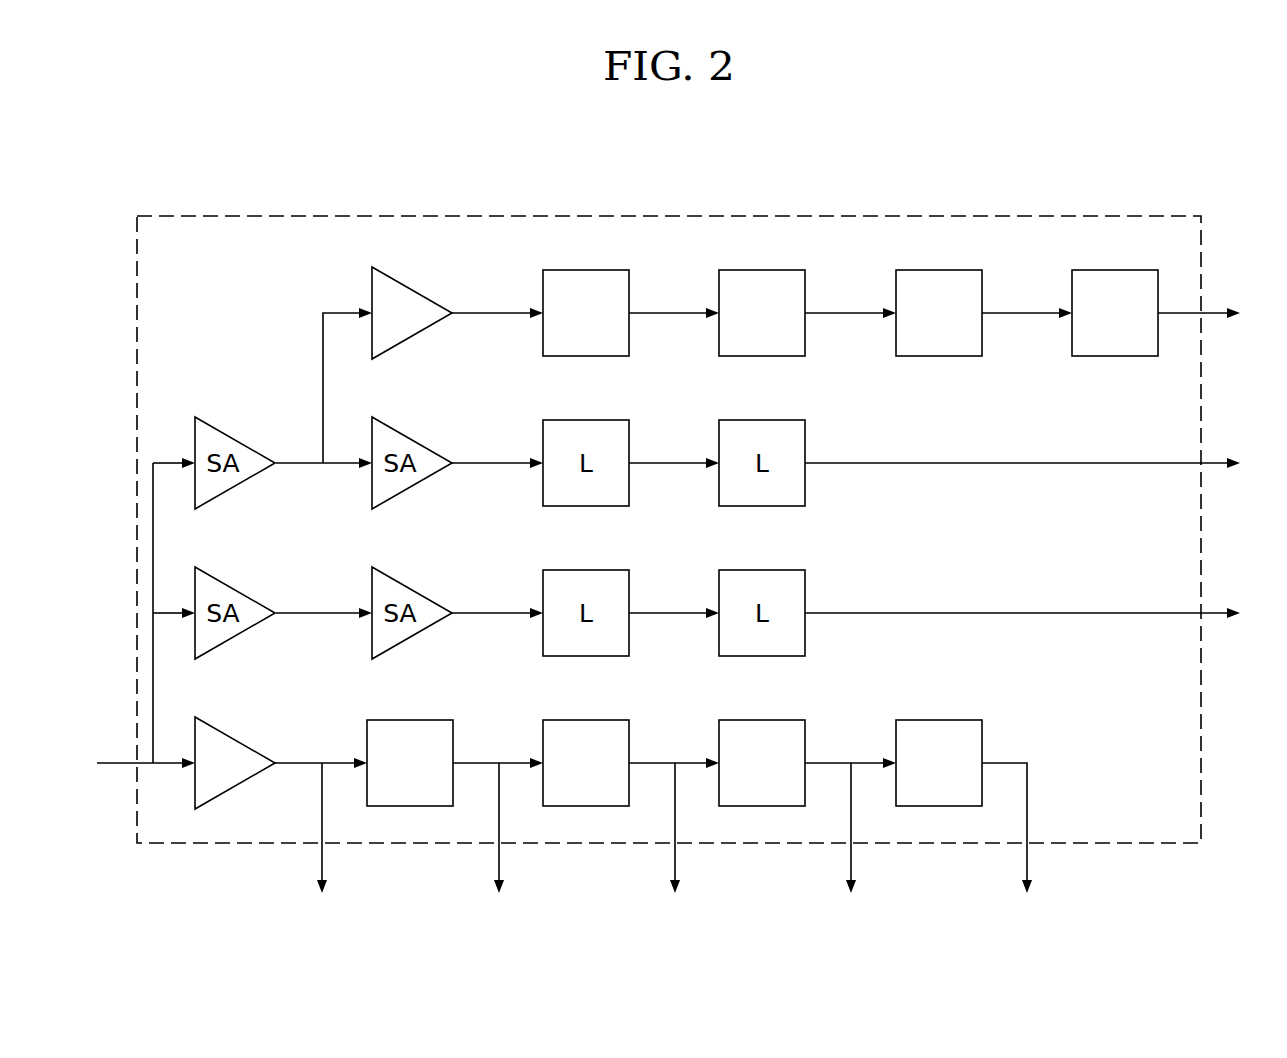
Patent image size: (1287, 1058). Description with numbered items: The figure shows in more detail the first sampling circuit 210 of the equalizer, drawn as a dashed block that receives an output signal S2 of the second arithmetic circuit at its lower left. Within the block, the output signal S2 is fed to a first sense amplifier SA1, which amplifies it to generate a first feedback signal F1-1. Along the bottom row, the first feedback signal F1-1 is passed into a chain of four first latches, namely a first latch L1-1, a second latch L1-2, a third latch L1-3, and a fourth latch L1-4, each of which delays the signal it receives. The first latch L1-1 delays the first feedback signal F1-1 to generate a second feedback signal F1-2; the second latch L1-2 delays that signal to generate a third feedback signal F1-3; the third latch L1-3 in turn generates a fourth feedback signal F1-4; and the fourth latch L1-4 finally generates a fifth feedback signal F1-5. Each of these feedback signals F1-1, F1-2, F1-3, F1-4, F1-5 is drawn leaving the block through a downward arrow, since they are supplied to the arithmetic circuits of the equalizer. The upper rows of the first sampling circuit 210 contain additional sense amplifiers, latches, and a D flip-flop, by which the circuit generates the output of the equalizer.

The first sampling circuit 210 is at (1152, 216).
The output signal of the second arithmetic circuit S2 is at (146, 751).
The first sense amplifier SA1 is at (235, 763).
The 1-1 latch L1-1 is at (410, 763).
The 1-2 latch L1-2 is at (586, 763).
The 1-3 latch L1-3 is at (762, 763).
The 1-4 latch L1-4 is at (939, 763).
The 1-1 feedback signal F1-1 is at (292, 828).
The 1-2 feedback signal F1-2 is at (469, 828).
The 1-3 feedback signal F1-3 is at (645, 828).
The 1-4 feedback signal F1-4 is at (821, 828).
The 1-5 feedback signal F1-5 is at (997, 828).